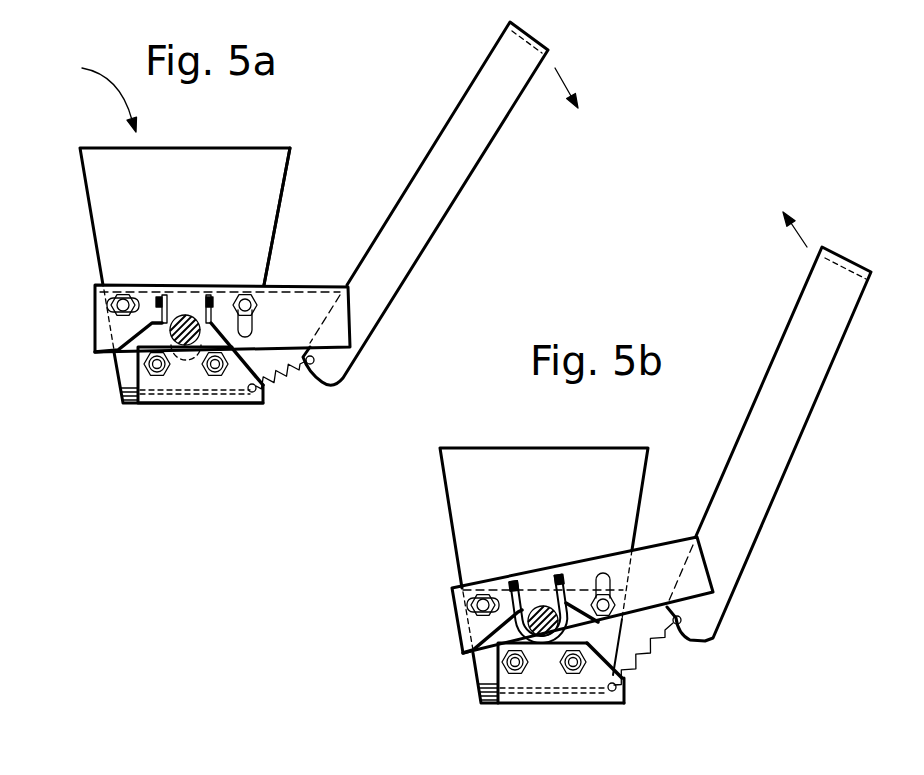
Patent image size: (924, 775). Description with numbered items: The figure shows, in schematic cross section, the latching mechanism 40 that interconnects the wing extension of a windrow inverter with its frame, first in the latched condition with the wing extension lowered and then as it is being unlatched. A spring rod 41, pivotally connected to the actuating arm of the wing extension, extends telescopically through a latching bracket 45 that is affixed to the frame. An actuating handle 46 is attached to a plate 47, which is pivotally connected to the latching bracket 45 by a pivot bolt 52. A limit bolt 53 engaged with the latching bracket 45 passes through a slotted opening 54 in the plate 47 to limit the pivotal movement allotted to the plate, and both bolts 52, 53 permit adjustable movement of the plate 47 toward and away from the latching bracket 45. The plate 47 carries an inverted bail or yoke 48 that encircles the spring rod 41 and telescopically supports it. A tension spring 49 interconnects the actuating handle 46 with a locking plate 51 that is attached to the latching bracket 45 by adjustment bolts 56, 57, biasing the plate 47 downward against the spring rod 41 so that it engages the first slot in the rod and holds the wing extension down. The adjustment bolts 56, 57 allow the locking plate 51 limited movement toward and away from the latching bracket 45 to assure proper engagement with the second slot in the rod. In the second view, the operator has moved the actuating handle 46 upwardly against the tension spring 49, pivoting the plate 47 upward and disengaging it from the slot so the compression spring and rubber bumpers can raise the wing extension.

In FIG. 5A, the latching mechanism 40 is at (94, 91).
In FIG. 5A, the spring rod 41 is at (185, 275).
In FIG. 5B, the spring rod 41 is at (541, 596).
In FIG. 5A, the latching bracket 45 is at (287, 168).
In FIG. 5A, the actuating handle 46 is at (487, 150).
In FIG. 5B, the actuating handle 46 is at (785, 333).
In FIG. 5A, the plate 47 is at (290, 286).
In FIG. 5B, the plate 47 is at (667, 542).
In FIG. 5A, the yoke 48 is at (176, 293).
In FIG. 5B, the yoke 48 is at (549, 645).
In FIG. 5A, the tension spring 49 is at (287, 372).
In FIG. 5B, the tension spring 49 is at (652, 650).
In FIG. 5A, the locking plate 51 is at (205, 407).
In FIG. 5B, the locking plate 51 is at (615, 705).
In FIG. 5A, the pivot bolt 52 is at (121, 290).
In FIG. 5B, the pivot bolt 52 is at (483, 592).
In FIG. 5A, the limit bolt 53 is at (258, 301).
In FIG. 5B, the limit bolt 53 is at (583, 590).
In FIG. 5A, the slotted opening 54 is at (253, 336).
In FIG. 5B, the slotted opening 54 is at (607, 572).
In FIG. 5A, the adjustment bolt 56 is at (160, 372).
In FIG. 5B, the adjustment bolt 56 is at (510, 670).
In FIG. 5A, the adjustment bolt 57 is at (223, 372).
In FIG. 5B, the adjustment bolt 57 is at (575, 670).